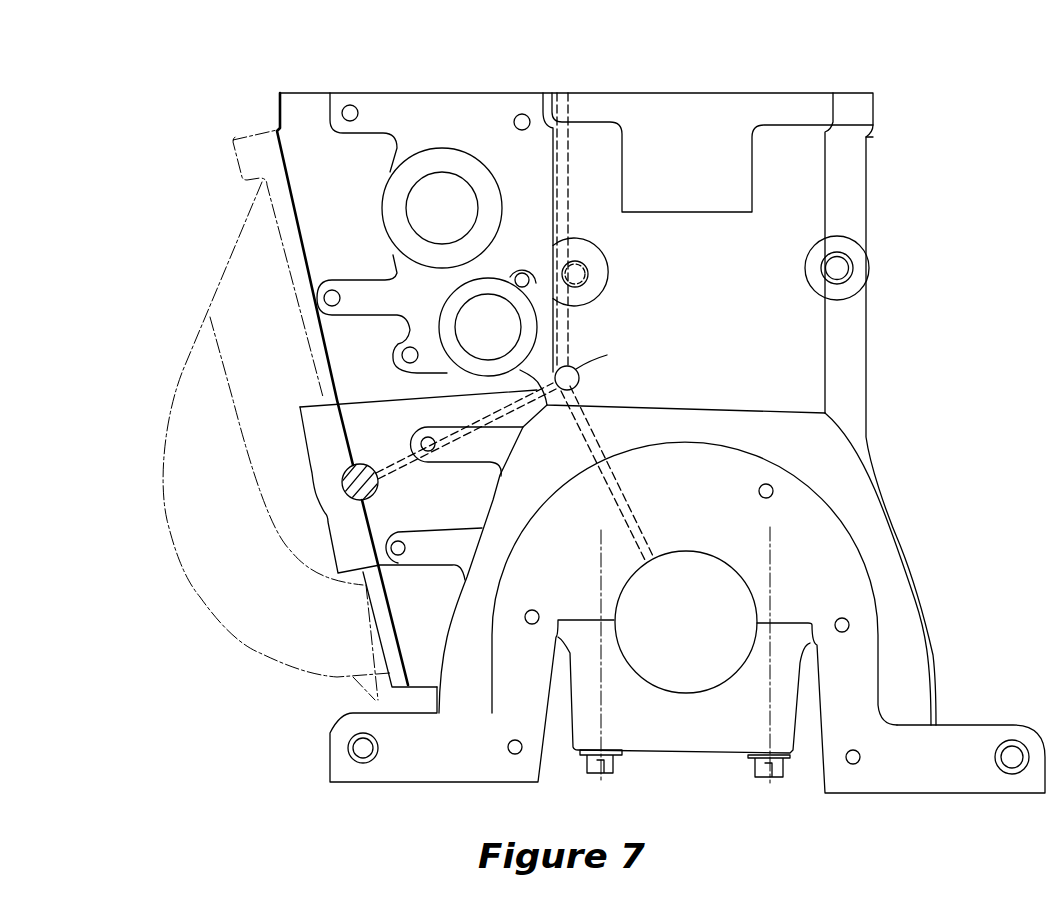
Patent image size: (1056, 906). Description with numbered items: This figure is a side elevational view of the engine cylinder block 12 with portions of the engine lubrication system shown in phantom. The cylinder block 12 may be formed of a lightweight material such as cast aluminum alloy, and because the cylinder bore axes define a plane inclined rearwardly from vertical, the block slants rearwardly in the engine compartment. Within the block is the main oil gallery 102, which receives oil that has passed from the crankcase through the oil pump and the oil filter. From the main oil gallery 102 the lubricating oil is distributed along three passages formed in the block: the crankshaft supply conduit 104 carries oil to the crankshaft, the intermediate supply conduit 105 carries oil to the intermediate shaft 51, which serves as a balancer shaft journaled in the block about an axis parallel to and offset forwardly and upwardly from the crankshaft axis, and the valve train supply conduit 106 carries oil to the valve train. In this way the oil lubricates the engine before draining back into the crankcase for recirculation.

The cylinder block 12 is at (855, 92).
The intermediate shaft 51 is at (369, 463).
The main oil gallery 102 is at (578, 370).
The crankshaft supply conduit 104 is at (640, 510).
The intermediate supply conduit 105 is at (408, 458).
The valve train supply conduit 106 is at (570, 193).